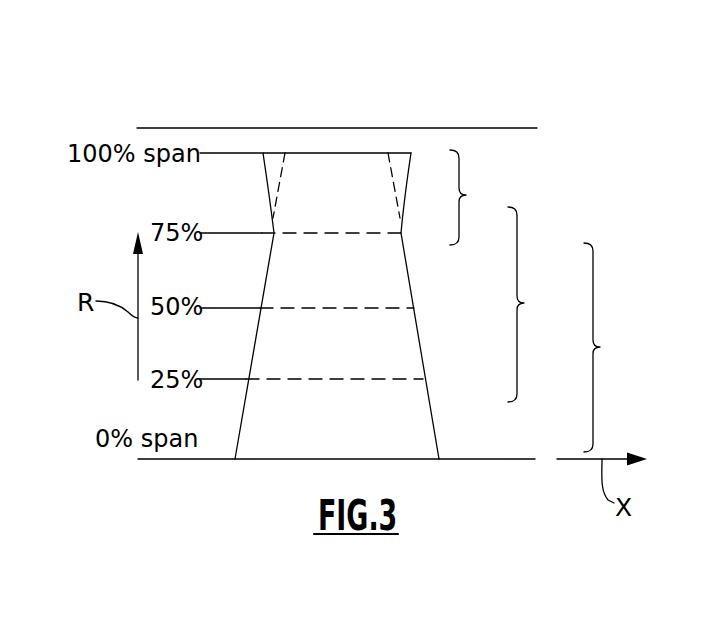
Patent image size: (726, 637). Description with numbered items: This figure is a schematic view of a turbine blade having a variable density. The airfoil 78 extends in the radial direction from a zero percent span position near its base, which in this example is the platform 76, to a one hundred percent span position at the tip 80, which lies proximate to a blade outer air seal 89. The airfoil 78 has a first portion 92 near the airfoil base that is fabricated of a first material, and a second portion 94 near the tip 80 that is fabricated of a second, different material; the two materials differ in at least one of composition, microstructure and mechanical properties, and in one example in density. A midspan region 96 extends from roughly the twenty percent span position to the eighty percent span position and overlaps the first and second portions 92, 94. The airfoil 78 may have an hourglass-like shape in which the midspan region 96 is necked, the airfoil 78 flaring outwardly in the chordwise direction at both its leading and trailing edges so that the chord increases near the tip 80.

The platform 76 is at (465, 459).
The airfoil 78 is at (428, 347).
The tip 80 is at (346, 153).
The blade outer air seal 89 is at (480, 128).
The first portion 92 is at (600, 347).
The second portion 94 is at (466, 195).
The midspan region 96 is at (524, 303).